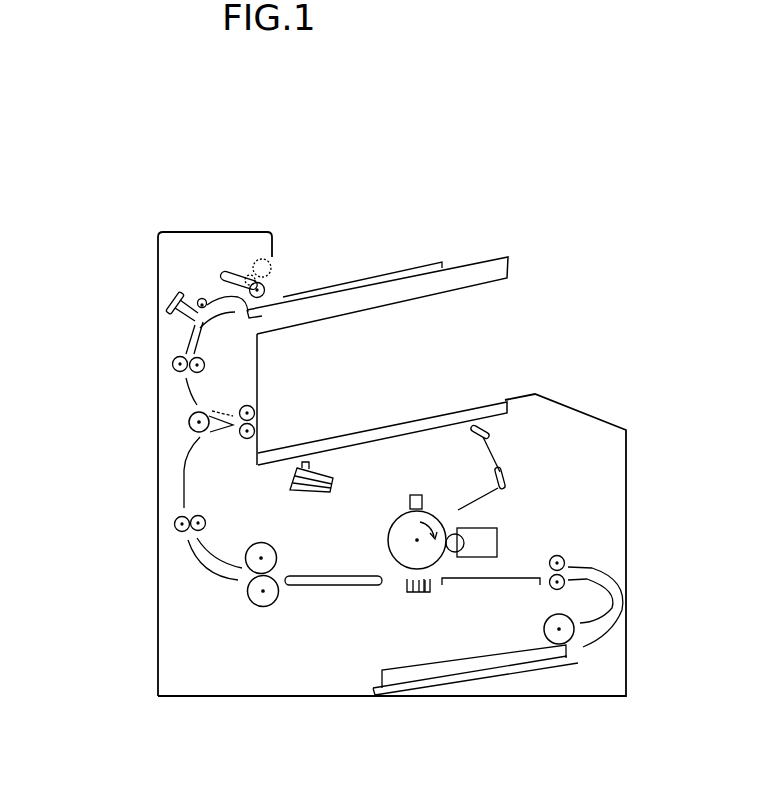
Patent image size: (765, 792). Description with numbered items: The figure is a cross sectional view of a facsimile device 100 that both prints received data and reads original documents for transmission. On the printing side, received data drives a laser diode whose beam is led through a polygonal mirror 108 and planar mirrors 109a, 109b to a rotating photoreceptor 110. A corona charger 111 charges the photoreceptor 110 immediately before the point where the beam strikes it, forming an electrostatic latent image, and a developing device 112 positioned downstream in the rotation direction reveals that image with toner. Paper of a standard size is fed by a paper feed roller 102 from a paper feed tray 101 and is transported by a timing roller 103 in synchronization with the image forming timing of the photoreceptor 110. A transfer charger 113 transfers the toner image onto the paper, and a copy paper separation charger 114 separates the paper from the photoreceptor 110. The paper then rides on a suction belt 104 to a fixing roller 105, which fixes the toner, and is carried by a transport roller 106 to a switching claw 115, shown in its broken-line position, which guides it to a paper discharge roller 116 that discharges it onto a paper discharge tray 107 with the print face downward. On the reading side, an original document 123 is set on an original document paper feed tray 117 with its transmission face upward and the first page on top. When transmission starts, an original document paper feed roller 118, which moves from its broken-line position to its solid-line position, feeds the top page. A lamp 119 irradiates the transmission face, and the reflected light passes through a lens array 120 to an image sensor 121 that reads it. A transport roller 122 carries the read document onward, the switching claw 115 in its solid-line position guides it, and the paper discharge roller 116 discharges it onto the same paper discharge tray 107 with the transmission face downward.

The facsimile device 100 is at (605, 410).
The paper feed tray 101 is at (488, 678).
The paper feed roller 102 is at (544, 626).
The timing roller 103 is at (562, 552).
The suction belt 104 is at (346, 574).
The fixing roller 105 is at (250, 597).
The transport roller 106 is at (174, 524).
The paper discharge tray 107 is at (490, 400).
The polygonal mirror 108 is at (290, 480).
The planar mirror 109a is at (490, 432).
The planar mirror 109b is at (505, 478).
The photoreceptor 110 is at (392, 522).
The corona charger 111 is at (418, 494).
The developing device 112 is at (498, 537).
The transfer charger 113 is at (423, 594).
The copy paper separation charger 114 is at (409, 594).
The switching claw 115 is at (189, 422).
The paper discharge roller 116 is at (250, 405).
The original document paper feed tray 117 is at (494, 265).
The original document paper feed roller 118 is at (274, 288).
The lamp 119 is at (200, 298).
The lens array 120 is at (172, 310).
The image sensor 121 is at (168, 300).
The transport roller 122 is at (172, 364).
The original document 123 is at (389, 275).